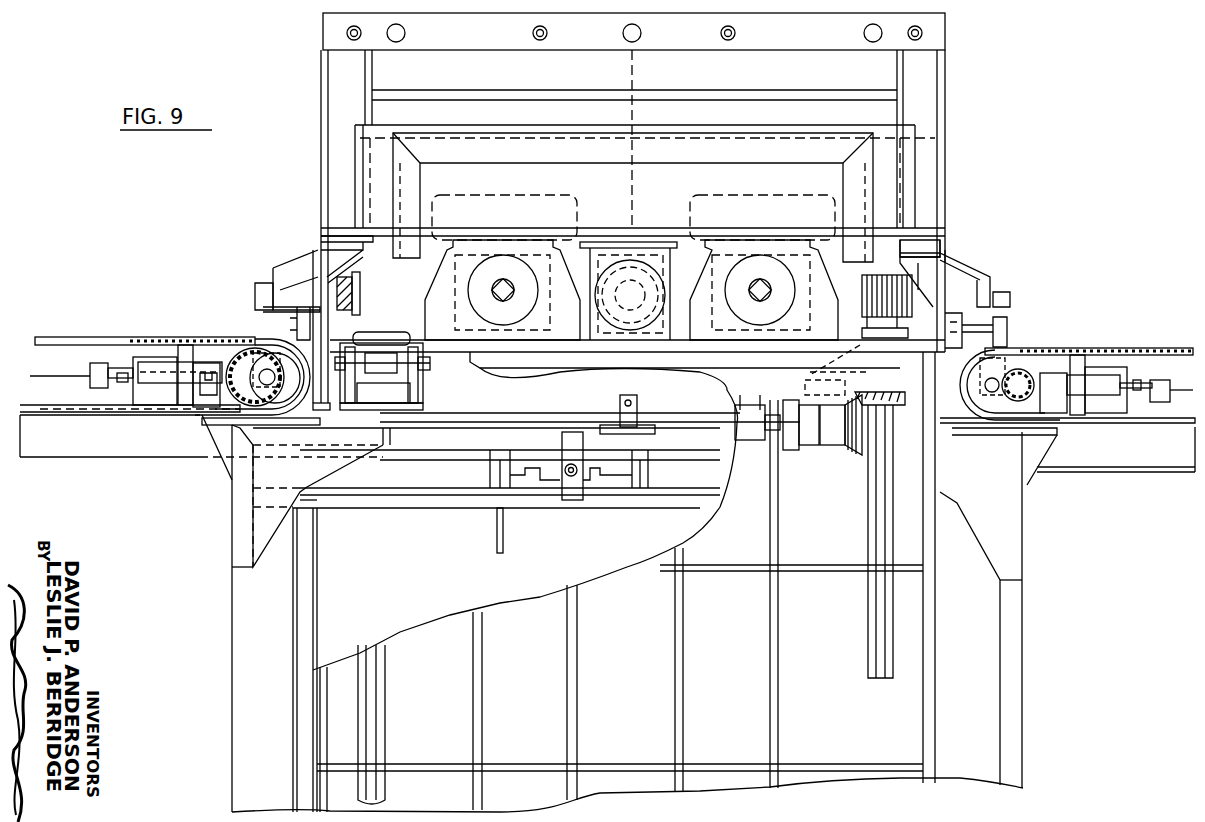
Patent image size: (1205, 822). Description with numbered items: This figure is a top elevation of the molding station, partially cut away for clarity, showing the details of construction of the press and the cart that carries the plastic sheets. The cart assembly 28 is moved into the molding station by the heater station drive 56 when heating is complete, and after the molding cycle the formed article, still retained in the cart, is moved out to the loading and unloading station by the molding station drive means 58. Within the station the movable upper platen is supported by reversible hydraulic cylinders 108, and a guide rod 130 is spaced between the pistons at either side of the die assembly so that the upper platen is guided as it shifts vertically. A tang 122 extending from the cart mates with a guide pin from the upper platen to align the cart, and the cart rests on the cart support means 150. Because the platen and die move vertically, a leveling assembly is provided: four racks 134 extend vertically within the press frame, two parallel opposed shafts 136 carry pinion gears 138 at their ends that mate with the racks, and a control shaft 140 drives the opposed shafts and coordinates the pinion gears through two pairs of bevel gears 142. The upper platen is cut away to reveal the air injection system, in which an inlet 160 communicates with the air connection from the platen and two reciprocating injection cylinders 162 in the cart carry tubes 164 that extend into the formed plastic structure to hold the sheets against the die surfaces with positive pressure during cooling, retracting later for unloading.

The cart assembly 28 is at (240, 535).
The heater station drive 56 is at (205, 335).
The molding station drive means 58 is at (1078, 347).
The reversible hydraulic cylinders 108 is at (500, 262).
The tang 122 is at (620, 405).
The guide rod 130 is at (636, 272).
The racks 134 is at (360, 287).
The opposed shafts 136 is at (872, 550).
The pinion gears 138 is at (867, 280).
The control shaft 140 is at (750, 440).
The bevel gears 142 is at (880, 455).
The cart support means 150 is at (398, 381).
The inlet 160 is at (575, 490).
The reciprocating injection cylinders 162 is at (492, 468).
The tubes 164 is at (497, 545).